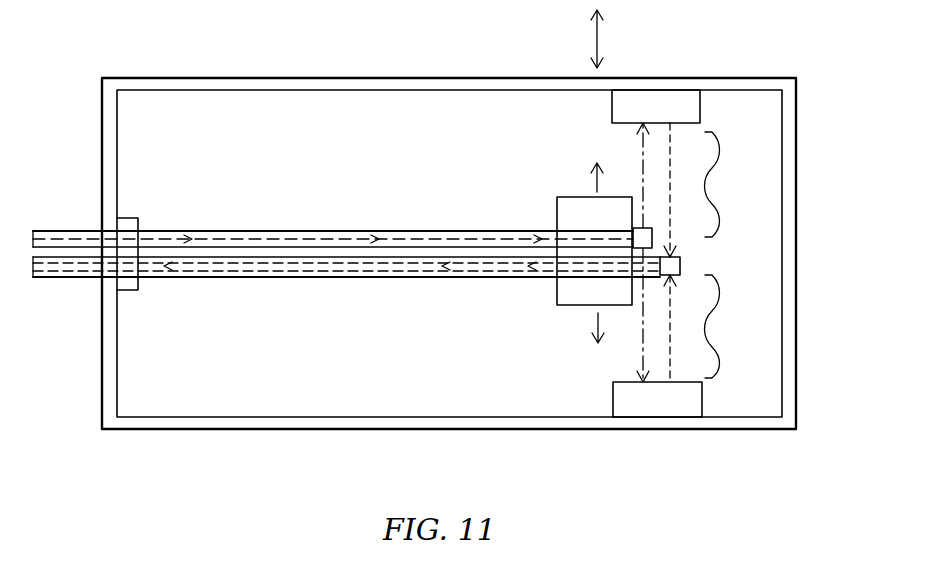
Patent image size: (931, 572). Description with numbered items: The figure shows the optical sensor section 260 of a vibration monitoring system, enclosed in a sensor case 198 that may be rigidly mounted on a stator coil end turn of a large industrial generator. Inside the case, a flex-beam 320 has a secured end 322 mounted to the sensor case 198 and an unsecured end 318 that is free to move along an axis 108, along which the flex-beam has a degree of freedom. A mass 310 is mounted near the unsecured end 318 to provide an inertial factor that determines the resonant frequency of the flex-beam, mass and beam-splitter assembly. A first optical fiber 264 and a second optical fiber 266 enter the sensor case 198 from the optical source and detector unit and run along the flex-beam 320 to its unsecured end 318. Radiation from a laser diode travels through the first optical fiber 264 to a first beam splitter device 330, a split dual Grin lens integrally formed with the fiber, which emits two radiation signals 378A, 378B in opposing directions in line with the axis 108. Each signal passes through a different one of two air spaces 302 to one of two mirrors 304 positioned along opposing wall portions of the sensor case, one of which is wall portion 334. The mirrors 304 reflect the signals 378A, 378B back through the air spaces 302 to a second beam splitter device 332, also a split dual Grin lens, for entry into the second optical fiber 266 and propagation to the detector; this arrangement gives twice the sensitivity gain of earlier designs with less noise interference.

The optical sensor section 260 is at (262, 58).
The wall portion 334 is at (436, 90).
The axis 108 is at (592, 38).
The sensor case 198 is at (718, 78).
The radiation signal 378B is at (670, 150).
The radiation signal 378A is at (672, 337).
The unsecured end 318 is at (645, 227).
The mass 310 is at (557, 197).
The mirror 304 is at (700, 108).
The air space 302 is at (715, 187).
The secured end 322 is at (138, 218).
The flex-beam 320 is at (290, 230).
The first optical fiber 264 is at (82, 233).
The second optical fiber 266 is at (84, 273).
The first beam splitter device 330 is at (652, 238).
The second beam splitter device 332 is at (680, 263).